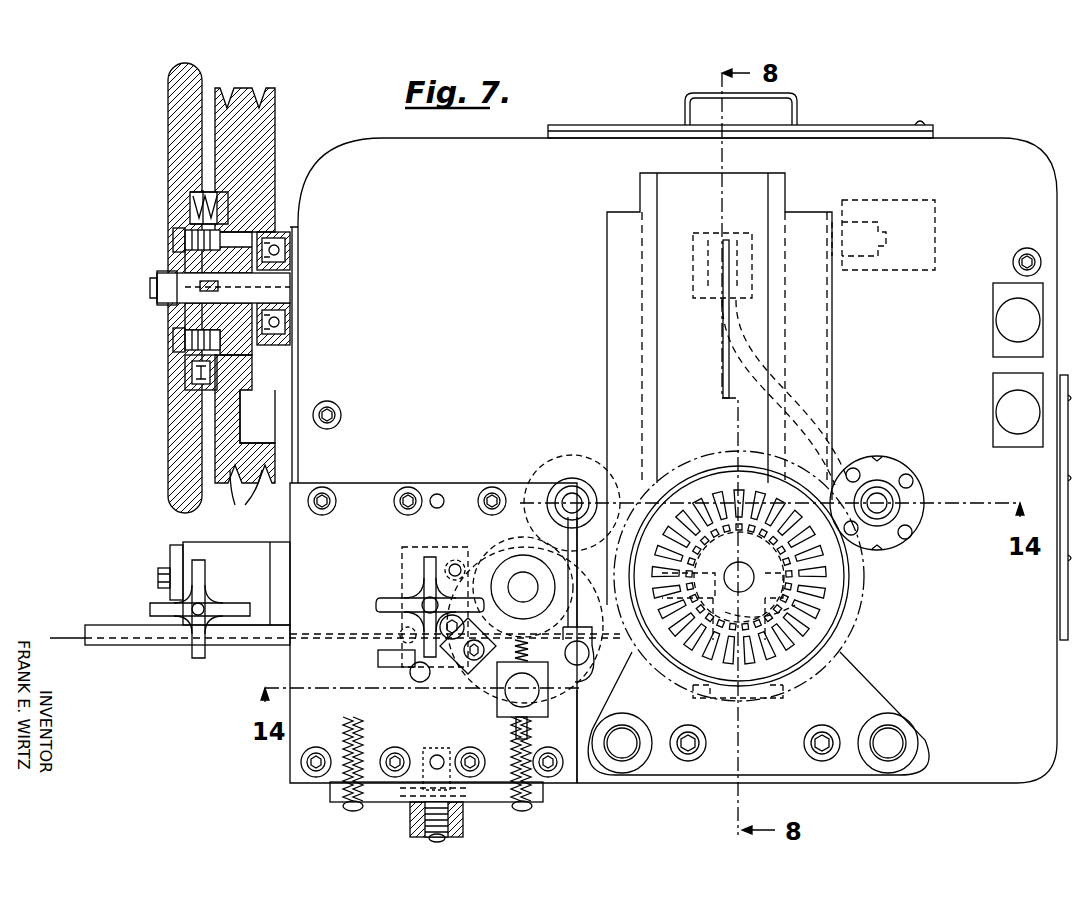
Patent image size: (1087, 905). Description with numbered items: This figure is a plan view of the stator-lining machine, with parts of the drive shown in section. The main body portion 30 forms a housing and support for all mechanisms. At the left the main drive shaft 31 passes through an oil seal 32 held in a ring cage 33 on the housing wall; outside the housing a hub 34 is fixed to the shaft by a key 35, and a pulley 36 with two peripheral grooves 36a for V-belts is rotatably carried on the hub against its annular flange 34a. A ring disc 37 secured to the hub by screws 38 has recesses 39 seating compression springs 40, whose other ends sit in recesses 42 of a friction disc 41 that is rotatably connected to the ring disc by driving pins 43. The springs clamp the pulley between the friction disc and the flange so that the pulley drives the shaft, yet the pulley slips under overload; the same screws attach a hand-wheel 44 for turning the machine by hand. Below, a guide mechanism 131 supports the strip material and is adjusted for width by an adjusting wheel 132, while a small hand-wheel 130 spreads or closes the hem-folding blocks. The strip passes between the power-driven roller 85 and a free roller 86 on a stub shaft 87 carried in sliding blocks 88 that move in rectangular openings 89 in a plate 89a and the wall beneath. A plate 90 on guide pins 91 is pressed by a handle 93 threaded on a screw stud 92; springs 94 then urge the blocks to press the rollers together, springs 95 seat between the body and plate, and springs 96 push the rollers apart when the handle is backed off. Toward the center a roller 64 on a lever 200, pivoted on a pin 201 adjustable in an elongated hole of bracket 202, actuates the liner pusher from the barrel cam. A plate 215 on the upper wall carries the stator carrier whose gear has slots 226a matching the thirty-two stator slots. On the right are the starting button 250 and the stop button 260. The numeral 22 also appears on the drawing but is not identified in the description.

The main body portion 30 is at (480, 148).
The main drive shaft 31 is at (282, 290).
The oil seal 32 is at (282, 265).
The ring cage 33 is at (270, 250).
The hub 34 is at (245, 240).
The annular flange 34a is at (255, 378).
The key 35 is at (290, 294).
The pulley 36 is at (237, 405).
The peripheral grooves 36a is at (242, 498).
The ring disc 37 is at (185, 235).
The screws 38 is at (180, 246).
The recesses 39 is at (198, 204).
The compression spring 40 is at (195, 214).
The friction disc 41 is at (203, 190).
The recesses 42 is at (228, 225).
The driving pins 43 is at (198, 370).
The hand-wheel 44 is at (180, 432).
The rod 22 is at (68, 636).
The supporting guide mechanism 131 is at (113, 622).
The adjusting wheel 132 is at (165, 607).
The hand-wheel 130 is at (393, 606).
The roller 85 is at (512, 546).
The free roller 86 is at (470, 700).
The stub shaft 87 is at (518, 695).
The sliding blocks 88 is at (500, 716).
The rectangular openings 89 is at (582, 683).
The plate 89a is at (464, 494).
The springs 96 is at (530, 645).
The plate 90 is at (547, 793).
The guide pins 91 is at (350, 810).
The screw stud 92 is at (426, 752).
The handle 93 is at (465, 826).
The springs 94 is at (540, 745).
The springs 95 is at (343, 737).
The roller 64 is at (833, 470).
The lever 200 is at (840, 350).
The pivot pin 201 is at (852, 225).
The bracket 202 is at (905, 215).
The plate 215 is at (870, 672).
The slots 226a is at (752, 497).
The starting button 250 is at (1000, 398).
The stop button 260 is at (1000, 306).